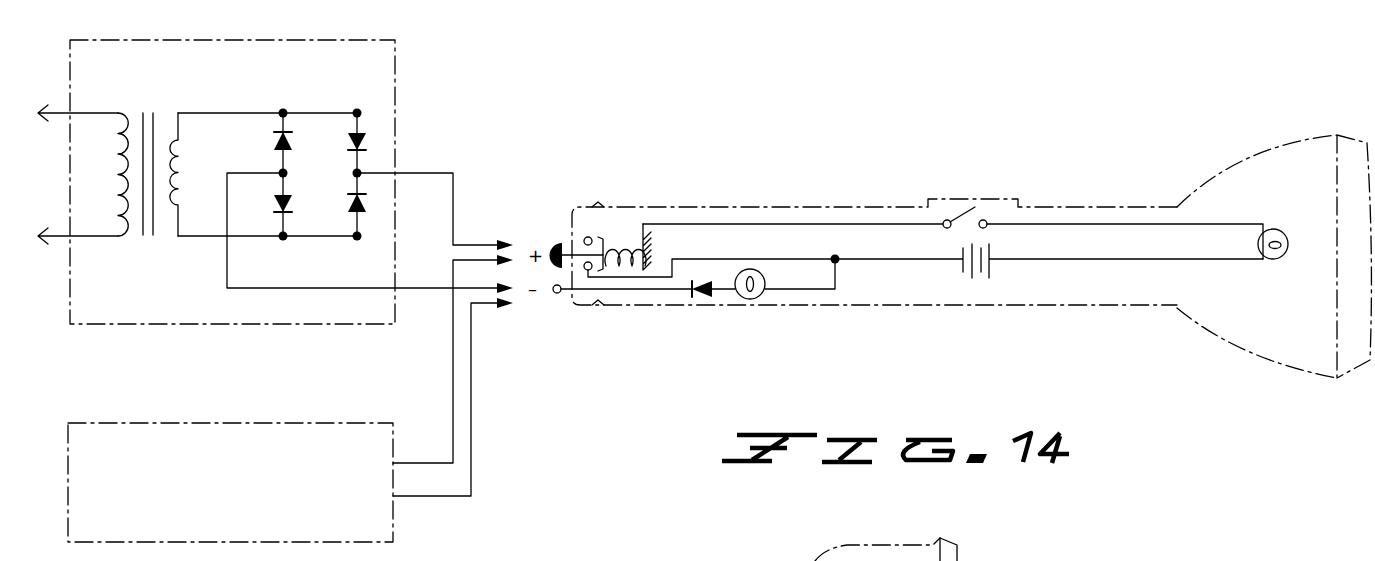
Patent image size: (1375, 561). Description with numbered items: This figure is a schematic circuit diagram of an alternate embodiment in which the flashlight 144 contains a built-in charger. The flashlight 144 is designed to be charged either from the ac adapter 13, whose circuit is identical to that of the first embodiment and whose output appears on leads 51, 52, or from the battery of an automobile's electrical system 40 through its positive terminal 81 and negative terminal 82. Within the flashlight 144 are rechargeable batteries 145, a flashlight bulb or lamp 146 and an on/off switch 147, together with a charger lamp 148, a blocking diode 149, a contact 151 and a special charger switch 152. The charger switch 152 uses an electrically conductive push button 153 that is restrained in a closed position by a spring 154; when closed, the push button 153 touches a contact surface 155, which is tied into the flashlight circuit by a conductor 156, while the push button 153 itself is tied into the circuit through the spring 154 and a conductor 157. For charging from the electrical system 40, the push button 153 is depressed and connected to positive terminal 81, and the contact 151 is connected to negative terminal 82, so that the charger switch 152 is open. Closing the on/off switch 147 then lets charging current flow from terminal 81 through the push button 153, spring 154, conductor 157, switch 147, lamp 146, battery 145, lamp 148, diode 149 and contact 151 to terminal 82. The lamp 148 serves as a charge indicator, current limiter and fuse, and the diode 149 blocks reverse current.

The ac adapter 13 is at (272, 324).
The automobile's electrical system 40 is at (310, 421).
The positive output lead of AC adapter 51 is at (419, 172).
The negative output lead of AC adapter 52 is at (421, 292).
The positive terminal 81 is at (426, 461).
The negative terminal 82 is at (428, 499).
The flashlight 144 is at (853, 307).
The rechargeable batteries 145 is at (983, 279).
The flashlight bulb or lamp 146 is at (1278, 260).
The on/off switch 147 is at (962, 211).
The charger lamp 148 is at (762, 298).
The blocking diode 149 is at (712, 292).
The contact 151 is at (555, 295).
The charger switch 152 is at (581, 233).
The push button 153 is at (555, 243).
The spring 154 is at (618, 243).
The contact surface 155 is at (588, 275).
The conductive element or conductor 156 is at (662, 280).
The conductive element or conductor 157 is at (690, 222).